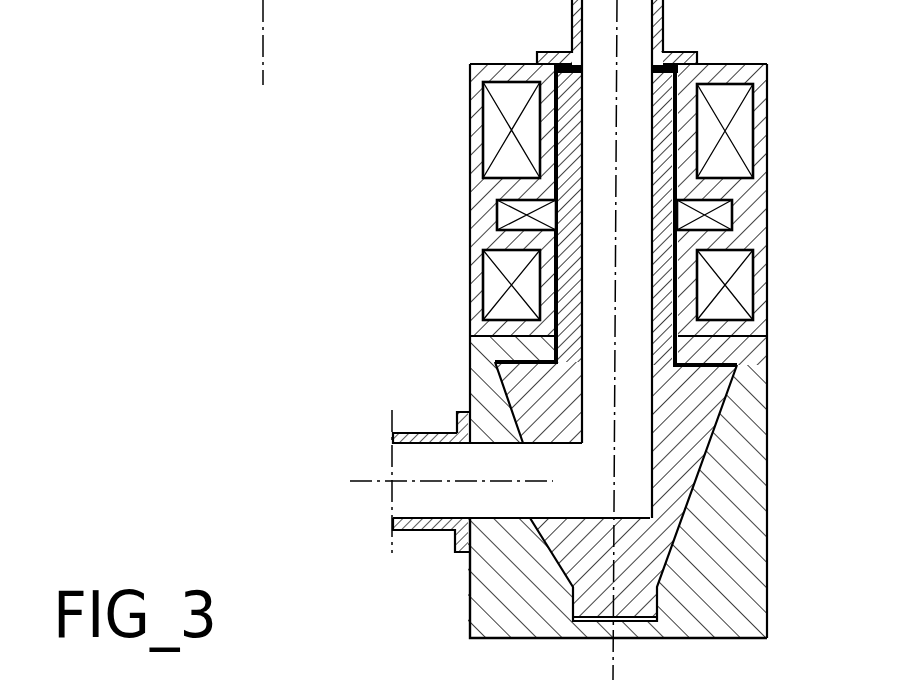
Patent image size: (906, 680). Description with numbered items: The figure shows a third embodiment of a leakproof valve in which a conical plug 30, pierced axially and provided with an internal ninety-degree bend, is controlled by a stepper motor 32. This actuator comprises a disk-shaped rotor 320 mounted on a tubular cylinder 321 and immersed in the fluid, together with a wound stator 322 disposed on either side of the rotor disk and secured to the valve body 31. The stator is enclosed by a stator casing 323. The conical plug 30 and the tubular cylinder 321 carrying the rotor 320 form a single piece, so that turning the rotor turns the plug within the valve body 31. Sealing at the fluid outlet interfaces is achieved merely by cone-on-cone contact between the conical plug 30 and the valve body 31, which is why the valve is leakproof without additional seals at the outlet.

The conical plug 30 is at (683, 455).
The valve body 31 is at (484, 383).
The stepper motor 32 is at (455, 161).
The disk-shaped rotor 320 is at (497, 214).
The tubular cylinder 321 is at (703, 65).
The wound stator 322 is at (740, 258).
The stator casing 323 is at (743, 334).